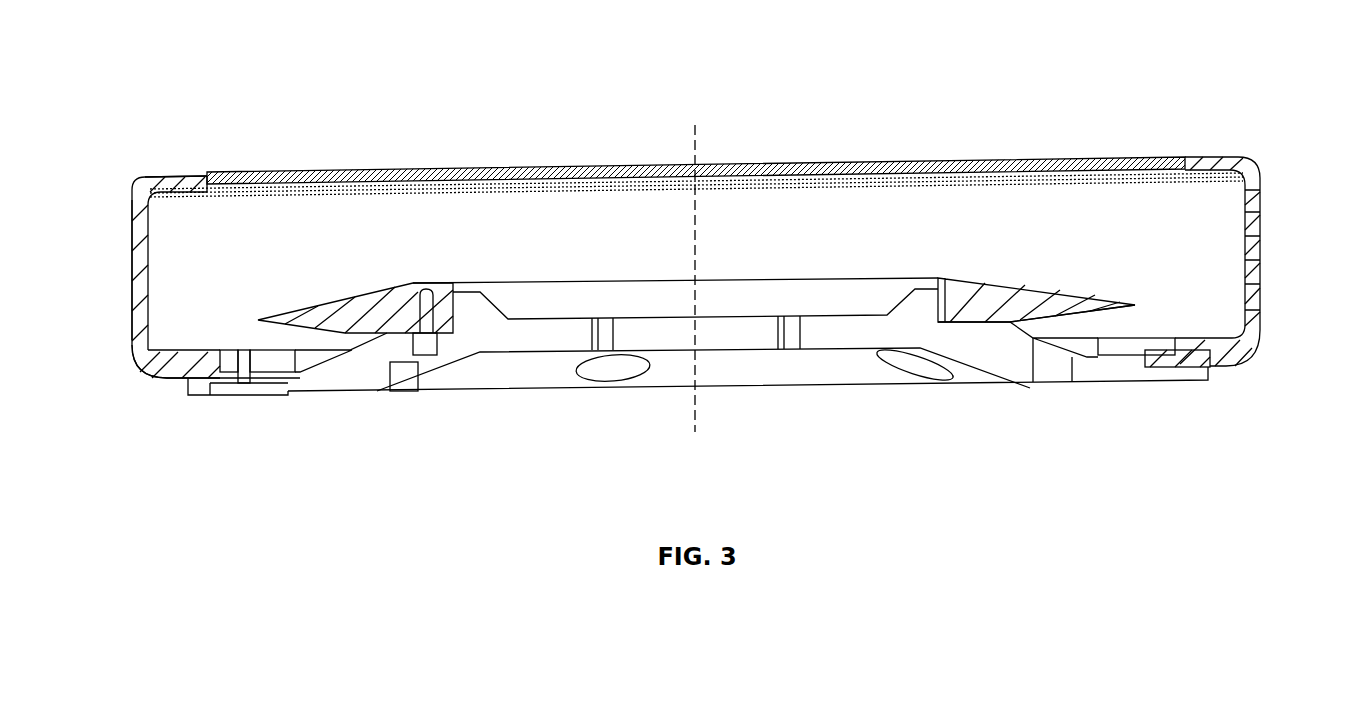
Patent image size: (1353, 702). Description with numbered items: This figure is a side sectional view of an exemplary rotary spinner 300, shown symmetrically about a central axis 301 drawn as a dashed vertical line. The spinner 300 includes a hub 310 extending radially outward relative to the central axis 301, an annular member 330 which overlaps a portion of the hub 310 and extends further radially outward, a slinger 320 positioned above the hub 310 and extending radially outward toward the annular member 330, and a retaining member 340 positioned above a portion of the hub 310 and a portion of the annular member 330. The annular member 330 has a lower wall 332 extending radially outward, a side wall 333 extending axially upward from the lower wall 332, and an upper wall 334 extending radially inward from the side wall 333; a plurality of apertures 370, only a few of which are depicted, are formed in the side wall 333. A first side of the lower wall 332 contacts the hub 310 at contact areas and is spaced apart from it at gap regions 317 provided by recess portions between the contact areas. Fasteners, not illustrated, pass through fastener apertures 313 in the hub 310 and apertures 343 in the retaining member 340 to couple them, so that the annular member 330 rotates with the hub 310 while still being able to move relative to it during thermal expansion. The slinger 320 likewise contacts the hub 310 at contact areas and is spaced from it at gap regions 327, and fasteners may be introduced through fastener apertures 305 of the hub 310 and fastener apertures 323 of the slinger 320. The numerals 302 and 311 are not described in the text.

The spinner 300 is at (1163, 74).
The central axis 301 is at (697, 150).
The support plate 302 is at (788, 345).
The fastener apertures 305 is at (412, 368).
The hub 310 is at (1088, 374).
The housing base portion 311 is at (140, 392).
The fastener apertures 313 is at (250, 383).
The gap regions 317 is at (1212, 362).
The slinger 320 is at (997, 283).
The fastener apertures 323 is at (424, 290).
The gap regions 327 is at (1012, 320).
The annular member 330 is at (1213, 152).
The lower wall 332 is at (178, 385).
The side wall 333 is at (140, 305).
The upper wall 334 is at (165, 178).
The retaining member 340 is at (1142, 333).
The apertures 343 is at (250, 354).
The apertures 370 is at (1262, 190).